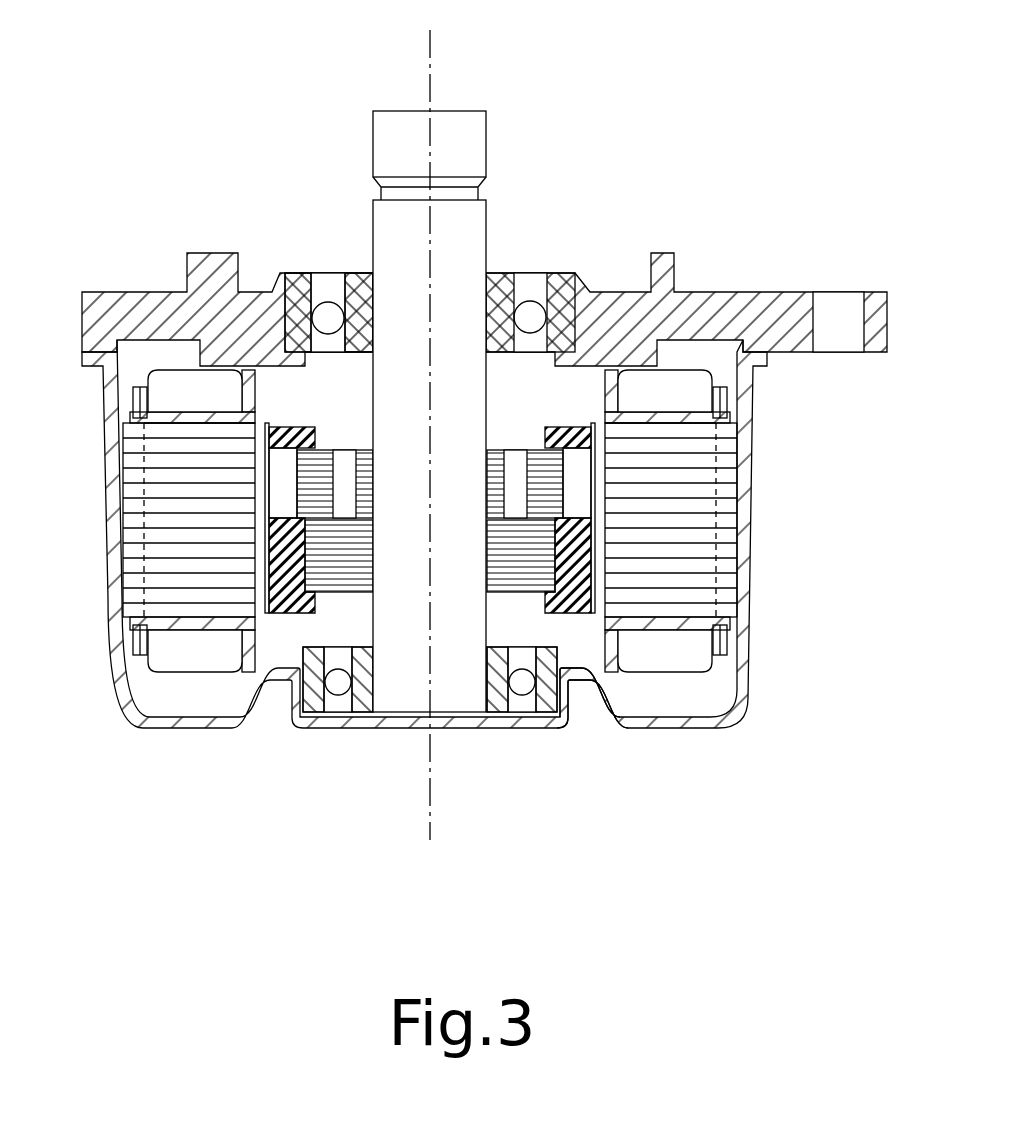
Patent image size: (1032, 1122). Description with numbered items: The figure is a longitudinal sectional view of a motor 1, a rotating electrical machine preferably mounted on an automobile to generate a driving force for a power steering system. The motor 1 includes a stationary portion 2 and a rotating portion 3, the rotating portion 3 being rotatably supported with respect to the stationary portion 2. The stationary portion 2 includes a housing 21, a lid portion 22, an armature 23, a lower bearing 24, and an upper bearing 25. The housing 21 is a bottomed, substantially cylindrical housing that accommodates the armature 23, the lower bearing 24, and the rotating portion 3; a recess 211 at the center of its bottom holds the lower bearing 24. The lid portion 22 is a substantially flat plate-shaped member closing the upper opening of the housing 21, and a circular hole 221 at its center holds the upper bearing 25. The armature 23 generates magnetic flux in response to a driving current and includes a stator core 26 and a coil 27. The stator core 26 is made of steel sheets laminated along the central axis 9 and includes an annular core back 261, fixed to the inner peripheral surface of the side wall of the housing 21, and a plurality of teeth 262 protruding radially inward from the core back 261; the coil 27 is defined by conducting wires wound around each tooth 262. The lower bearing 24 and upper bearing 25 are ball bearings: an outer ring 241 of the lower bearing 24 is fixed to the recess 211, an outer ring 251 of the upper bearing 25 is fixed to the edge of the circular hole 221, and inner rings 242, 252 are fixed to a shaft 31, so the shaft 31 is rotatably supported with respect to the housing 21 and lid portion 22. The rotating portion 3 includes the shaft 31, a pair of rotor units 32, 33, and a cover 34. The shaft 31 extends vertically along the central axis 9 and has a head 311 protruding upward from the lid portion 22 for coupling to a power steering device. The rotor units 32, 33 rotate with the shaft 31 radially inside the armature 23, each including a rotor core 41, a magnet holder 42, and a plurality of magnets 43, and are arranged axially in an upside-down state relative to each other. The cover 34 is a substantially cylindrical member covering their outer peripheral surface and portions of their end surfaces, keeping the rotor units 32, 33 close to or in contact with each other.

The motor 1 is at (196, 104).
The stationary portion 2 is at (803, 277).
The rotating portion 3 is at (297, 400).
The central axis 9 is at (430, 78).
The housing 21 is at (683, 737).
The recess 211 is at (565, 705).
The lid portion 22 is at (702, 312).
The circular hole 221 is at (558, 305).
The armature 23 is at (216, 847).
The lower bearing 24 is at (280, 793).
The outer ring 241 is at (320, 692).
The inner ring 242 is at (363, 692).
The upper bearing 25 is at (258, 200).
The outer ring 251 is at (300, 290).
The inner ring 252 is at (360, 290).
The stator core 26 is at (68, 797).
The core back 261 is at (133, 565).
The teeth 262 is at (185, 565).
The coil 27 is at (205, 653).
The shaft 31 is at (467, 250).
The head 311 is at (462, 150).
The rotor unit 32 is at (532, 608).
The rotor unit 33 is at (552, 415).
The cover 34 is at (272, 612).
The rotor core 41 is at (315, 478).
The magnet holder 42 is at (583, 440).
The magnets 43 is at (283, 500).